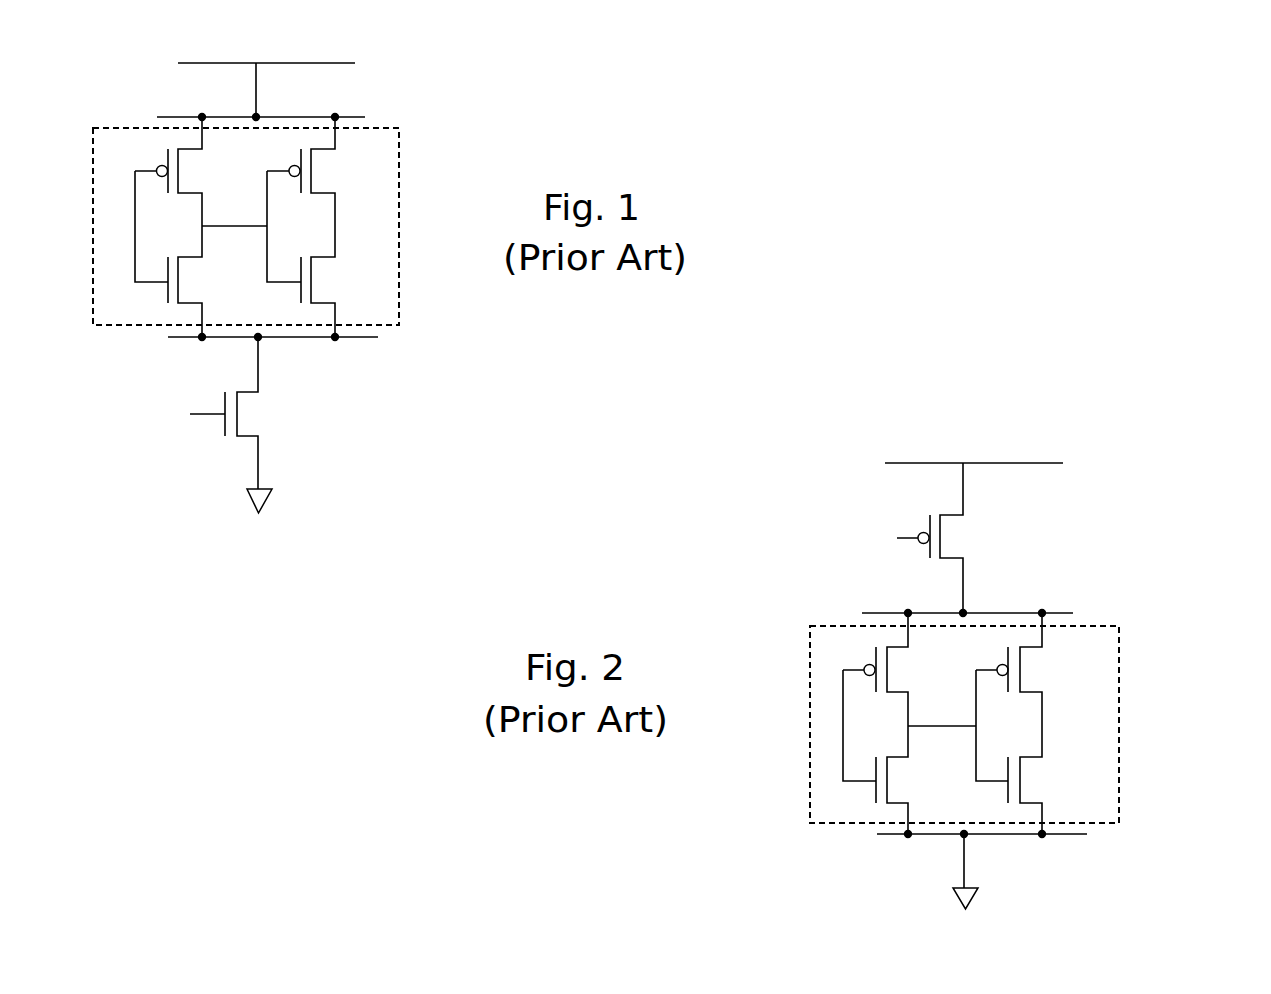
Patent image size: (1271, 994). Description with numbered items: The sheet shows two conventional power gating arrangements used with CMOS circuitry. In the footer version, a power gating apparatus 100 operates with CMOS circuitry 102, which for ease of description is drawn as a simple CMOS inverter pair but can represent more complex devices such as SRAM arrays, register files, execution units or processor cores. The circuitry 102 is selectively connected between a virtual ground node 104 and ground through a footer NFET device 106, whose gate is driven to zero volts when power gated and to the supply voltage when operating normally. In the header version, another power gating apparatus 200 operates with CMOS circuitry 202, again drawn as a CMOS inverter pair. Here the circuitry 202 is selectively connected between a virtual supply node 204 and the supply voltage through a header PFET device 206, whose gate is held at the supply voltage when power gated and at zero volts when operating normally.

In FIG. 1, the power gating apparatus 100 is at (91, 102).
In FIG. 1, the CMOS circuitry 102 is at (398, 193).
In FIG. 1, the virtual ground node 104 is at (307, 337).
In FIG. 1, the footer (NFET) device 106 is at (249, 436).
In FIG. 2, the power gating apparatus 200 is at (797, 501).
In FIG. 2, the CMOS circuitry 202 is at (1118, 692).
In FIG. 2, the virtual supply node 204 is at (1002, 613).
In FIG. 2, the header (PFET) device 206 is at (950, 562).